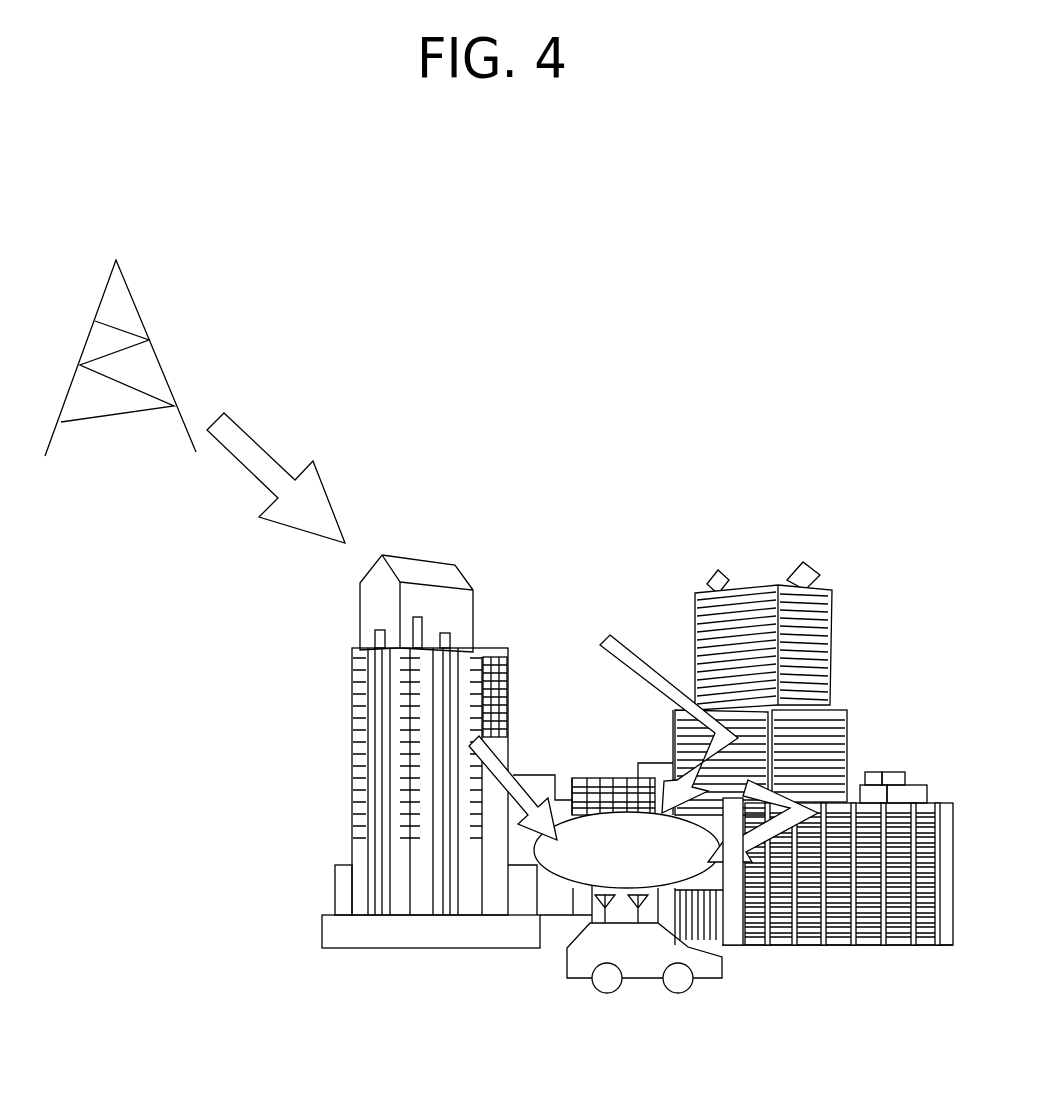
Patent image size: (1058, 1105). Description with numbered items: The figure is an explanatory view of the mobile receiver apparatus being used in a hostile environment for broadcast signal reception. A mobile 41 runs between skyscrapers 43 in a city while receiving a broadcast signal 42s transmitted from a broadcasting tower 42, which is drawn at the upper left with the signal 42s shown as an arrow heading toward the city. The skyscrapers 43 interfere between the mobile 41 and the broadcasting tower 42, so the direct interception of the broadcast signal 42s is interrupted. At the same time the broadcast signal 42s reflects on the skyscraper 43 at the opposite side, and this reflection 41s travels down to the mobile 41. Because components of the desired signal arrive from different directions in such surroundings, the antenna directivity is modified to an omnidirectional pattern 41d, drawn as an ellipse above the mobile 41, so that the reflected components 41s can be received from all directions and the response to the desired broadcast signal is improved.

The mobile 41 is at (707, 967).
The omnidirectional pattern 41d is at (583, 865).
The reflection 41s is at (622, 652).
The broadcasting tower 42 is at (127, 312).
The broadcast signal 42s is at (257, 458).
The skyscrapers 43 is at (822, 628).